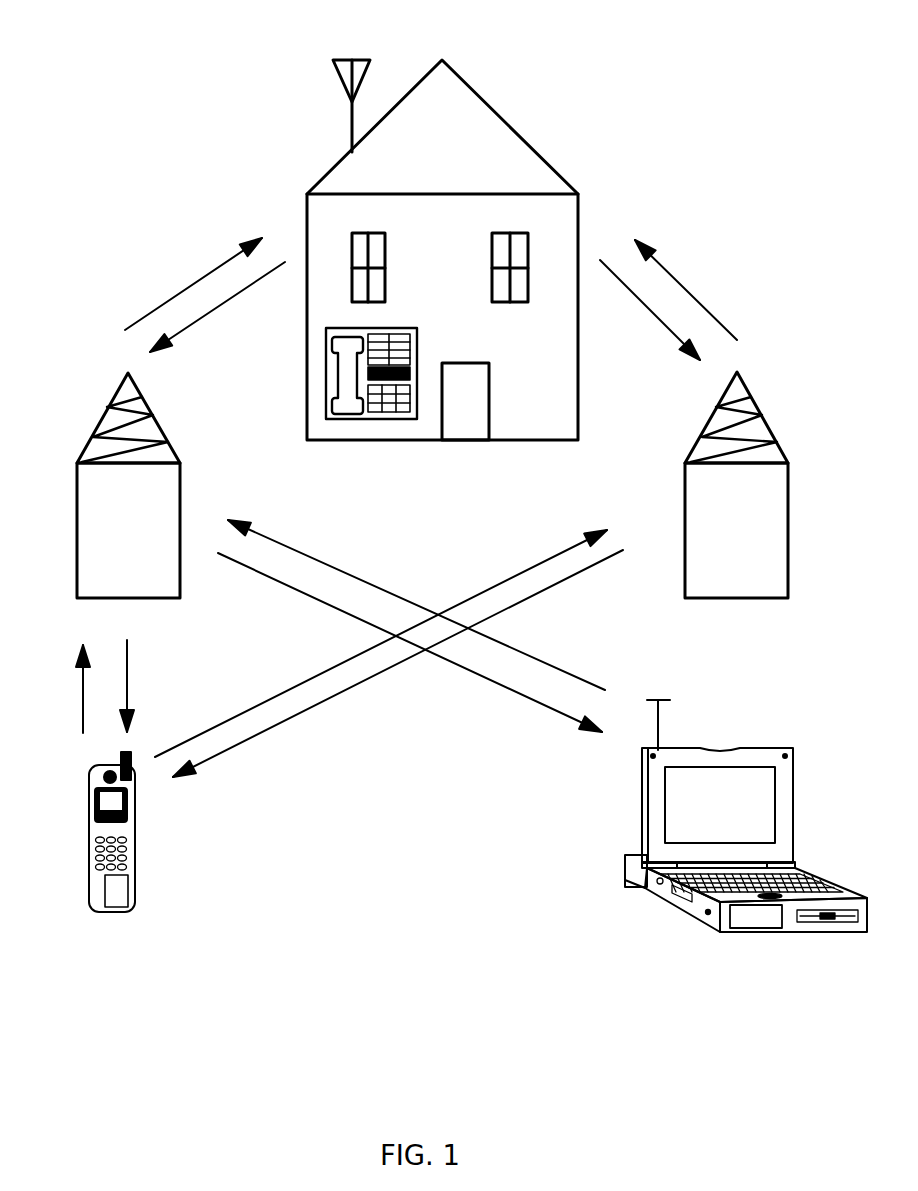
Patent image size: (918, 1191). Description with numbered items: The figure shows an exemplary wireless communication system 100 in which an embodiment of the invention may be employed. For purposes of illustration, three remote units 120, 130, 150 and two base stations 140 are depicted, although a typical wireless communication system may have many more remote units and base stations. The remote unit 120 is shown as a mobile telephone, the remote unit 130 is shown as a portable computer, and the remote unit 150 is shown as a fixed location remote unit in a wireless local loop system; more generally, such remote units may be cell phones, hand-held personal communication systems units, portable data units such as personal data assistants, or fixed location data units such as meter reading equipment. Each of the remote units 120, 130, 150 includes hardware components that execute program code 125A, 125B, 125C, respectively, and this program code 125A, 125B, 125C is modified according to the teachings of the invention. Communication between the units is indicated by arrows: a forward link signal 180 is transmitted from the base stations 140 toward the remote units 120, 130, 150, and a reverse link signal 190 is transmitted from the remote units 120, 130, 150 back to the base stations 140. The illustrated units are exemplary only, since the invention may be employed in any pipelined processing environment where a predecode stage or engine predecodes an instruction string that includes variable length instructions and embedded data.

The wireless communication system 100 is at (148, 105).
The remote unit 120 is at (129, 832).
The program code 125A is at (117, 888).
The program code 125B is at (378, 383).
The program code 125C is at (757, 917).
The remote unit 130 is at (746, 832).
The base station 140 is at (110, 406).
The remote unit 150 is at (405, 277).
The forward link signal 180 is at (197, 277).
The reverse link signal 190 is at (221, 305).